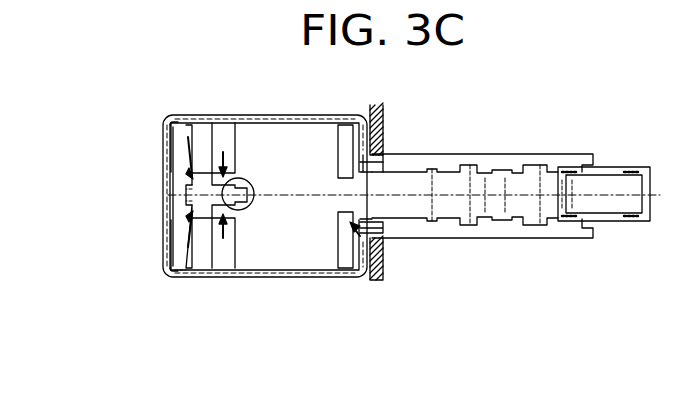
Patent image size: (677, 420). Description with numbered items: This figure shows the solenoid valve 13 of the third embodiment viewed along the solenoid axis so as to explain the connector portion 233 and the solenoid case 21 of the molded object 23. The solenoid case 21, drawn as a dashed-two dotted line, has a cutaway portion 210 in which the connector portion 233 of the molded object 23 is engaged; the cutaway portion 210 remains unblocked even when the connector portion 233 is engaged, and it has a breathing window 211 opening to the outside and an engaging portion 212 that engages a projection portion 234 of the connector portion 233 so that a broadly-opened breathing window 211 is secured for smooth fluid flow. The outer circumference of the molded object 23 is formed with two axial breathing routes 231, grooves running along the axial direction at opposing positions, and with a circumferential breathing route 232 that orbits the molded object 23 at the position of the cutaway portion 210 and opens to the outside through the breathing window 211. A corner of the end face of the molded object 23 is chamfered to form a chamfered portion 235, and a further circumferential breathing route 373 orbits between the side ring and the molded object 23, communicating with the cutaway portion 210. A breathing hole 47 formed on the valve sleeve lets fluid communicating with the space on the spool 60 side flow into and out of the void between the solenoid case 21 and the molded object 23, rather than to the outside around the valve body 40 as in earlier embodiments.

The solenoid valve 13 is at (597, 267).
The solenoid case 21 is at (357, 276).
The molded object 23 is at (337, 140).
The axial breathing route 231 is at (321, 147).
The circumferential breathing route 232 is at (220, 124).
The connector portion 233 is at (185, 203).
The projection portion 234 is at (256, 178).
The chamfered portion 235 is at (167, 127).
The circumferential breathing route 373 is at (185, 277).
The cutaway portion 210 is at (152, 336).
The breathing window 211 is at (205, 268).
The engaging portion 212 is at (253, 212).
The valve body 40 is at (537, 160).
The breathing hole 47 is at (380, 234).
The spool 60 is at (513, 202).